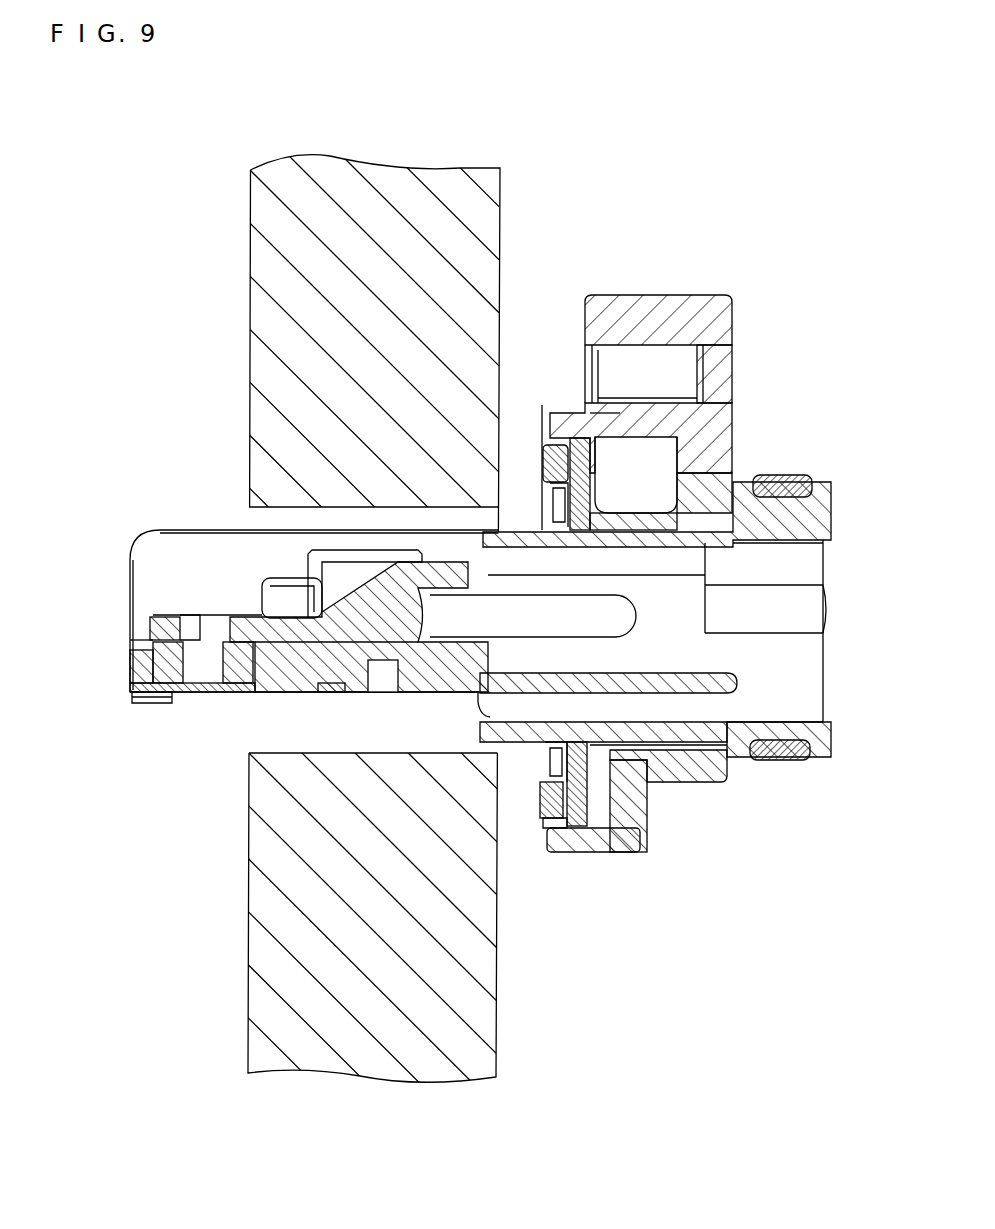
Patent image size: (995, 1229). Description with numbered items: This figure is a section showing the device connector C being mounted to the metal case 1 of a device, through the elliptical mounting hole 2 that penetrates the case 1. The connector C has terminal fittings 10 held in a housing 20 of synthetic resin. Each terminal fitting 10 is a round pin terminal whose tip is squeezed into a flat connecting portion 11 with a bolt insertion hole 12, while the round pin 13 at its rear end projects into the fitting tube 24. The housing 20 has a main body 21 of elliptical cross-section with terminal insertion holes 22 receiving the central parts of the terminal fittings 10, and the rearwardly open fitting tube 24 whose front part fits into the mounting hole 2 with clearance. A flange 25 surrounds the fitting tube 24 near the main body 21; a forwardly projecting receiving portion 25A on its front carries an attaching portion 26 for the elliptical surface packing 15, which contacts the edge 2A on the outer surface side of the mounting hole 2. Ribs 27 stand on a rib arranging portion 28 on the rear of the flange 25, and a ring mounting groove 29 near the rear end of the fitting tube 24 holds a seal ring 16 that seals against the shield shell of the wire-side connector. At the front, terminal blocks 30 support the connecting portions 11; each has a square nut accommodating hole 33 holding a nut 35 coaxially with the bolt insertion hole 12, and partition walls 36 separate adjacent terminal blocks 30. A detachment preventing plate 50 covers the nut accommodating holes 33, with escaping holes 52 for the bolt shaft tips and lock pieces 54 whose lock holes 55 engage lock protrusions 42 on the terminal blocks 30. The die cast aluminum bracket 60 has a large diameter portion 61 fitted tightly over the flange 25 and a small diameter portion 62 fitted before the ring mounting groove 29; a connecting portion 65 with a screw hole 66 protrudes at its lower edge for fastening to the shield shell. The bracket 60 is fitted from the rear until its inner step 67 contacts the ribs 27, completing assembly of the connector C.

The case 1 is at (412, 178).
The mounting hole 2 is at (247, 507).
The edge 2A is at (503, 487).
The terminal fitting 10 is at (428, 532).
The connecting portion 11 is at (147, 620).
The bolt insertion hole 12 is at (180, 618).
The round pin 13 is at (588, 612).
The surface packing 15 is at (540, 450).
The seal ring 16 is at (766, 762).
The housing 20 is at (431, 742).
The main body 21 is at (422, 678).
The terminal insertion hole 22 is at (478, 720).
The fitting tube 24 is at (690, 733).
The flange 25 is at (597, 852).
The receiving portion 25A is at (582, 800).
The attaching portion 26 is at (552, 850).
The rib 27 is at (603, 458).
The rib arranging portion 28 is at (623, 477).
The ring mounting groove 29 is at (800, 478).
The terminal block 30 is at (138, 666).
The nut accommodating hole 33 is at (166, 680).
The nut 35 is at (150, 632).
The partition wall 36 is at (204, 530).
The lock protrusion 42 is at (313, 707).
The detachment preventing plate 50 is at (127, 688).
The escaping hole 52 is at (201, 690).
The lock piece 54 is at (333, 687).
The lock hole 55 is at (284, 693).
The bracket 60 is at (732, 452).
The large diameter portion 61 is at (577, 852).
The small diameter portion 62 is at (714, 782).
The connecting portion 65 is at (667, 297).
The screw hole 66 is at (694, 347).
The step 67 is at (605, 437).
The device connector C is at (761, 223).